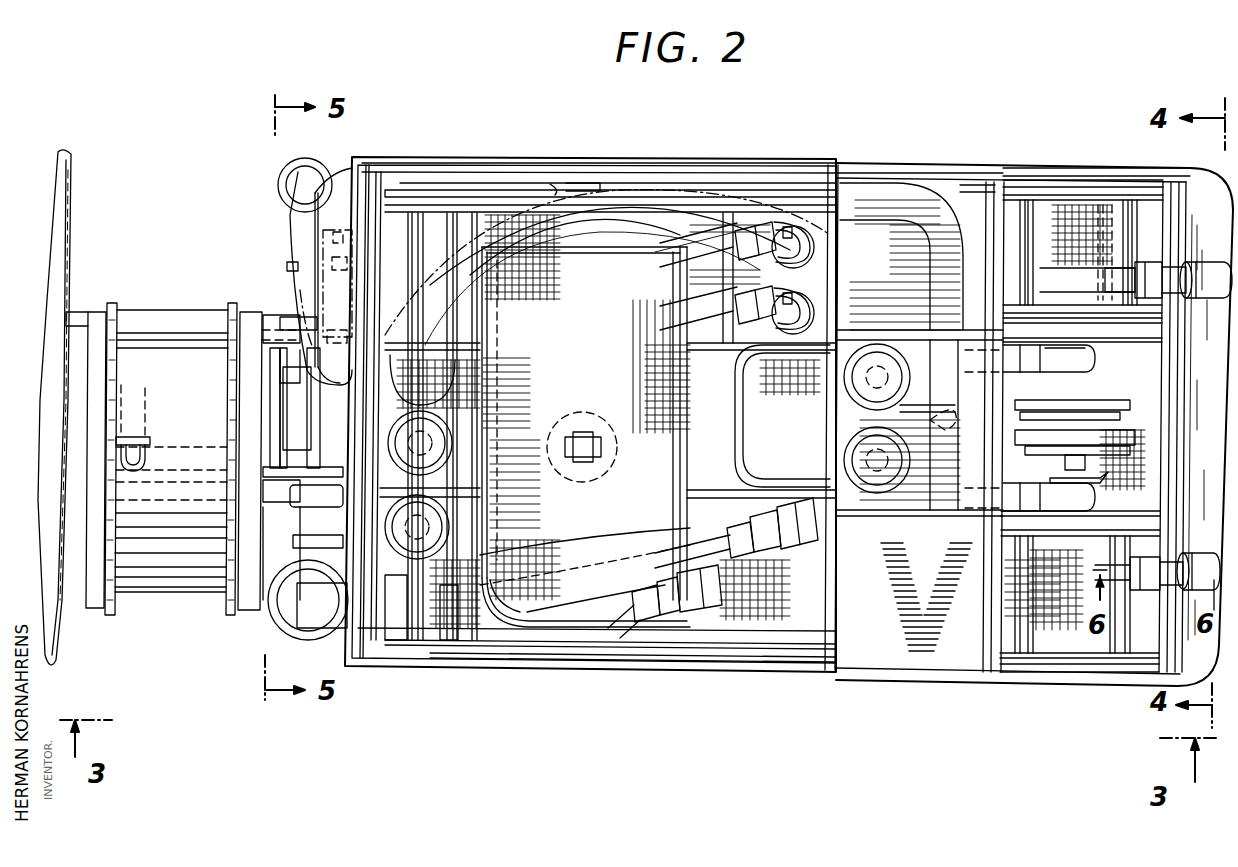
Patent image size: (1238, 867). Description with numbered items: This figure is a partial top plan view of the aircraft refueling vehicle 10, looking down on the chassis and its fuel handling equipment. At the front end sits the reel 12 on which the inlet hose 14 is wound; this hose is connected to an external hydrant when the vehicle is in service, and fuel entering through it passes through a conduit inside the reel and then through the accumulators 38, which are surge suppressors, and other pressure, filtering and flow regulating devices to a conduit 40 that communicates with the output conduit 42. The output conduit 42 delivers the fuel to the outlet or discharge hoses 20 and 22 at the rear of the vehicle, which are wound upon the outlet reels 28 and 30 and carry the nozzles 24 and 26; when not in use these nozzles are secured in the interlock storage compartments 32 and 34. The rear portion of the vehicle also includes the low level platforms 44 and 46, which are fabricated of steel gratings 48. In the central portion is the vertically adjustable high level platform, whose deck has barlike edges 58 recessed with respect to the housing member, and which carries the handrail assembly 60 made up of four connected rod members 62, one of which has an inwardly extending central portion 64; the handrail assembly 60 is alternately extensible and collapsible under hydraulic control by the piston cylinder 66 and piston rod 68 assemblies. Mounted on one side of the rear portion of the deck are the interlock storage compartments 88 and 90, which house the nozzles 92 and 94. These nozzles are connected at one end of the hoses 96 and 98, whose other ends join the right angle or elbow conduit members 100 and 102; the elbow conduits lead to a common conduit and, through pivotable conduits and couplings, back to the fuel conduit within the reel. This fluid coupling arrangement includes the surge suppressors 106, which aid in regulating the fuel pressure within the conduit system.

The aircraft refueling vehicle 10 is at (52, 148).
The reel 12 is at (112, 305).
The inlet hose 14 is at (136, 418).
The outlet hose 20 is at (1128, 567).
The outlet hose 22 is at (1130, 278).
The nozzle 24 is at (1143, 580).
The nozzle 26 is at (1153, 266).
The outlet reel 28 is at (1043, 657).
The outlet reel 30 is at (1040, 195).
The interlock storage compartment 32 is at (1200, 553).
The interlock storage compartment 34 is at (1196, 300).
The accumulator 38 is at (865, 370).
The conduit 40 is at (915, 175).
The output conduit 42 is at (985, 405).
The low level platform 44 is at (1142, 178).
The low level platform 46 is at (940, 160).
The steel grating 48 is at (970, 190).
The barlike edge 58 is at (710, 162).
The handrail assembly 60 is at (462, 154).
The rod member 62 is at (826, 190).
The inwardly extending central portion 64 is at (738, 430).
The piston cylinder 66 is at (400, 192).
The piston rod 68 is at (565, 183).
The interlock storage compartment 88 is at (710, 612).
The interlock storage compartment 90 is at (808, 540).
The nozzle 92 is at (668, 625).
The nozzle 94 is at (748, 528).
The hose 96 is at (710, 300).
The hose 98 is at (713, 237).
The elbow conduit member 100 is at (793, 315).
The elbow conduit member 102 is at (793, 248).
The surge suppressor 106 is at (445, 525).